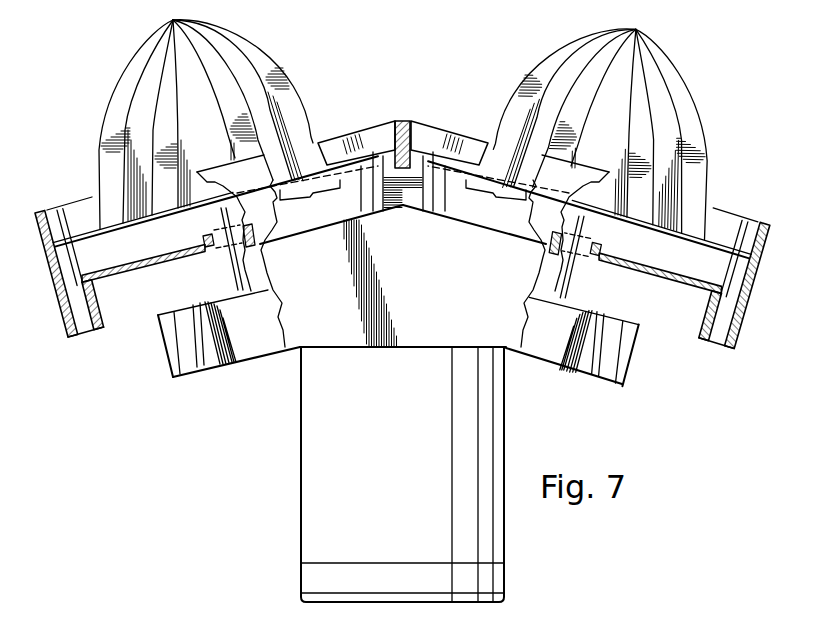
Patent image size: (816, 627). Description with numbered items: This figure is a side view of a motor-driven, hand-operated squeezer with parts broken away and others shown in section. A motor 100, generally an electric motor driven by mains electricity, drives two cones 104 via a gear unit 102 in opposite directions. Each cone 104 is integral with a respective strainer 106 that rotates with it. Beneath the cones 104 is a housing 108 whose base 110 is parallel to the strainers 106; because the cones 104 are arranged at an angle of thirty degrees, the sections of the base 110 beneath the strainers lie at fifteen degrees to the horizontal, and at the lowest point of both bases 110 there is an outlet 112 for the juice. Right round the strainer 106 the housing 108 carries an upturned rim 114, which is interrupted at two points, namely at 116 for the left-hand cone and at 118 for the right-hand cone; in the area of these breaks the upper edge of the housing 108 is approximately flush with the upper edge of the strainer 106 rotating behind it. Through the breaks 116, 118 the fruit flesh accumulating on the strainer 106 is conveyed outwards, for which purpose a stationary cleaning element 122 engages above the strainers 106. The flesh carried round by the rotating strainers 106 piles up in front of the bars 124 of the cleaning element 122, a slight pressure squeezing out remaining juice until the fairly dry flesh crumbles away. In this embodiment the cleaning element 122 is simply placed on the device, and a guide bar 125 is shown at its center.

The motor 100 is at (403, 474).
The gear unit 102 is at (212, 357).
The cone 104 is at (260, 59).
The strainer 106 is at (100, 229).
The housing 108 is at (128, 286).
The base 110 is at (161, 266).
The outlet 112 is at (86, 337).
The upturned rim 114 is at (40, 209).
The break 116 is at (287, 189).
The break 118 is at (518, 189).
The cleaning element 122 is at (416, 116).
The bar 124 is at (366, 133).
The guide bar 125 is at (403, 120).